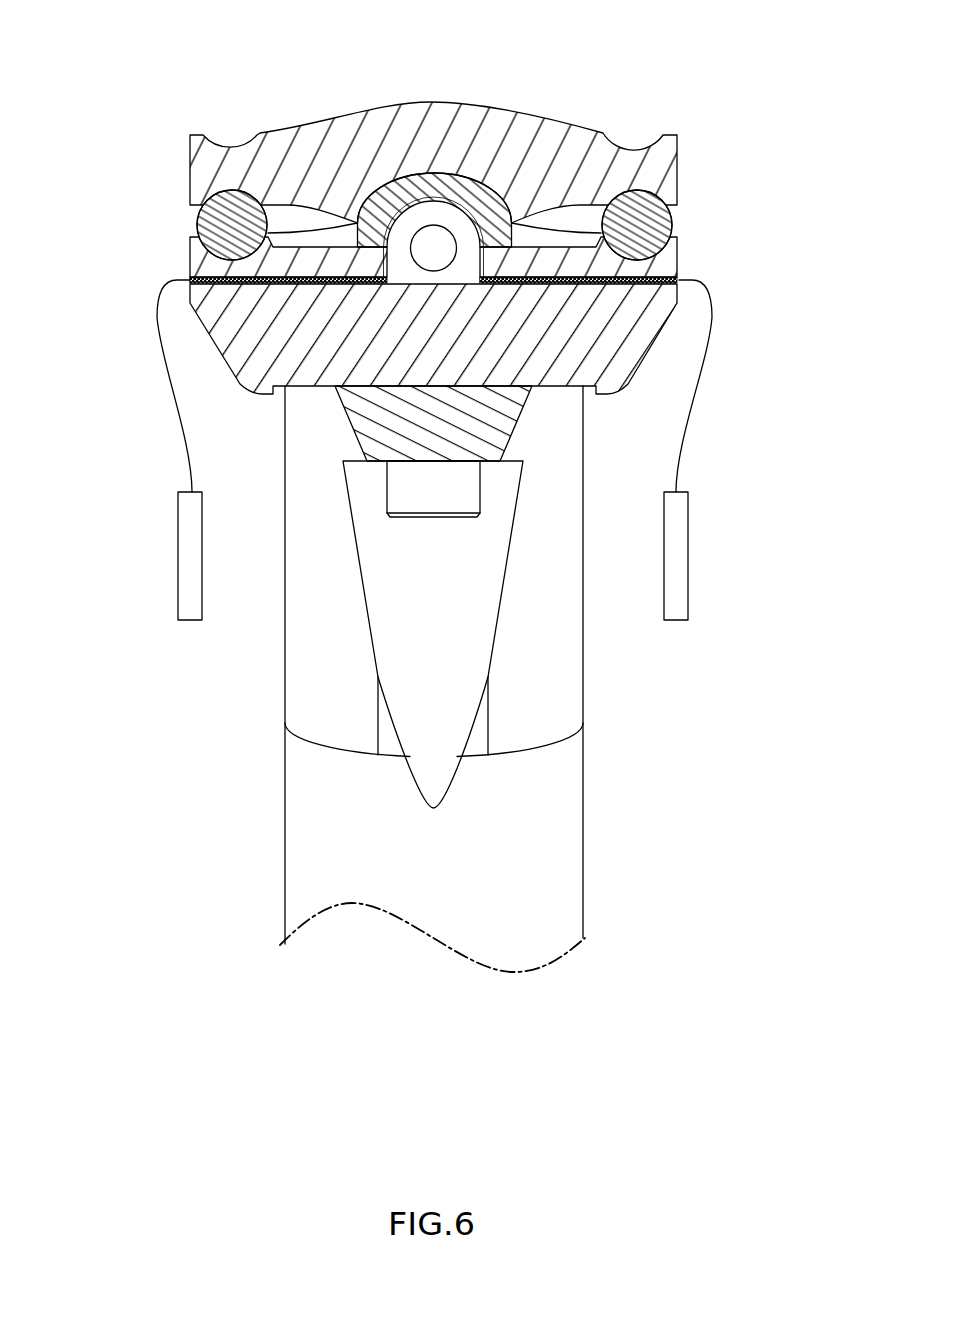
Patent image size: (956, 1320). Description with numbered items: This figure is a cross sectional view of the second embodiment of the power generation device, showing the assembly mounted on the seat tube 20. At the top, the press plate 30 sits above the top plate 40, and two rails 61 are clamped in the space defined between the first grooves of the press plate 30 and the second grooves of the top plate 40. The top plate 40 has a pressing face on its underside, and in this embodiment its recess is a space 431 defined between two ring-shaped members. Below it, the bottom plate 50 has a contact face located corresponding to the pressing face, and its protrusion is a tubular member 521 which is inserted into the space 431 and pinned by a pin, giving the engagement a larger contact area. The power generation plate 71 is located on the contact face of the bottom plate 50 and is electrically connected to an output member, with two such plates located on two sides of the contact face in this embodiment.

The seat tube 20 is at (300, 848).
The press plate 30 is at (538, 133).
The top plate 40 is at (667, 261).
The space 431 is at (426, 212).
The bottom plate 50 is at (622, 347).
The tubular member 521 is at (432, 215).
The rails 61 is at (200, 218).
The power generation plate 71 is at (248, 284).